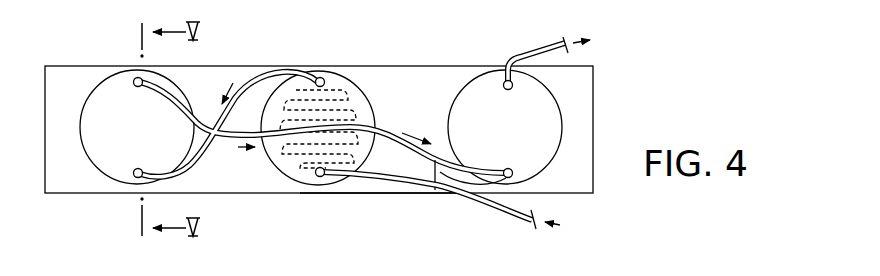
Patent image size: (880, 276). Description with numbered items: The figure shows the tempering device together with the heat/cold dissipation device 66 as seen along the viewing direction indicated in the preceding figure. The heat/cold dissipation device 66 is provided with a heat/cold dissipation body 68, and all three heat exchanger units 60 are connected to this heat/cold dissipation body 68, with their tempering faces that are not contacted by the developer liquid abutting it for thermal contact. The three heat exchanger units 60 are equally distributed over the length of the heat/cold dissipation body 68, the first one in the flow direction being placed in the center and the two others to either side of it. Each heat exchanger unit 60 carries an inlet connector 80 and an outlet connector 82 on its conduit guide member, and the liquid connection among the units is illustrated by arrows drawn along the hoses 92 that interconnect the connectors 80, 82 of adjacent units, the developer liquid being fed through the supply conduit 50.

The supply conduit 50 is at (538, 48).
The heat exchanger unit 60 is at (256, 60).
The heat/cold dissipation device 66 is at (379, 205).
The heat/cold dissipation body 68 is at (65, 186).
The inlet connector 80 is at (134, 178).
The outlet connector 82 is at (131, 78).
The hose 92 is at (199, 127).